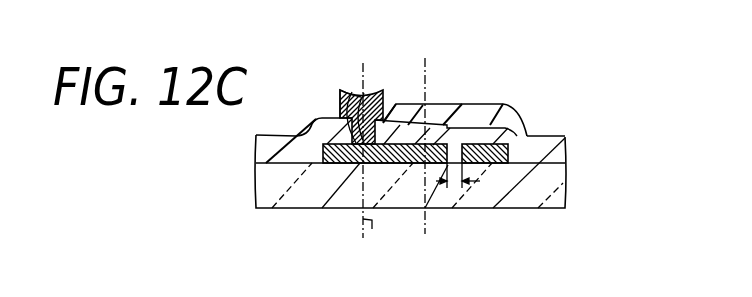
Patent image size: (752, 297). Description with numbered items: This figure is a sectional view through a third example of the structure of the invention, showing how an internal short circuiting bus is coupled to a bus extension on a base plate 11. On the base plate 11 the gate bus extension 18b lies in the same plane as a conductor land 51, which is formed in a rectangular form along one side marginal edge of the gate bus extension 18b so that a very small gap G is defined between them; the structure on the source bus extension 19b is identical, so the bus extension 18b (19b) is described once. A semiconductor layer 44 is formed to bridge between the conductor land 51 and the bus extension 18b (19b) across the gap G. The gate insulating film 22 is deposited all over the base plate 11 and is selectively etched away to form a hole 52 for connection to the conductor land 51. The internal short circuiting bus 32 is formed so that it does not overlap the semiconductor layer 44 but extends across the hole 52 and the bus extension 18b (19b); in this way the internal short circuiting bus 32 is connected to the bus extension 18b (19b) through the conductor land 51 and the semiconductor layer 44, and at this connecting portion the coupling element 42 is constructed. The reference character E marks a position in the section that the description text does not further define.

The base plate 11 is at (563, 190).
The gate insulating film 22 is at (300, 143).
The conductor land 51 is at (392, 167).
The gate bus extension 18b is at (509, 197).
The source bus extension 19b is at (491, 167).
The internal short circuiting bus 32 is at (377, 90).
The hole 52 is at (347, 90).
The coupling element 42 is at (452, 103).
The semiconductor layer 44 is at (502, 133).
The gap G is at (453, 186).
The section line E is at (371, 238).